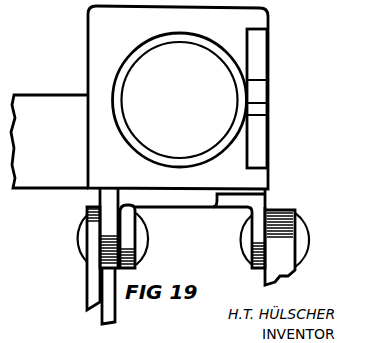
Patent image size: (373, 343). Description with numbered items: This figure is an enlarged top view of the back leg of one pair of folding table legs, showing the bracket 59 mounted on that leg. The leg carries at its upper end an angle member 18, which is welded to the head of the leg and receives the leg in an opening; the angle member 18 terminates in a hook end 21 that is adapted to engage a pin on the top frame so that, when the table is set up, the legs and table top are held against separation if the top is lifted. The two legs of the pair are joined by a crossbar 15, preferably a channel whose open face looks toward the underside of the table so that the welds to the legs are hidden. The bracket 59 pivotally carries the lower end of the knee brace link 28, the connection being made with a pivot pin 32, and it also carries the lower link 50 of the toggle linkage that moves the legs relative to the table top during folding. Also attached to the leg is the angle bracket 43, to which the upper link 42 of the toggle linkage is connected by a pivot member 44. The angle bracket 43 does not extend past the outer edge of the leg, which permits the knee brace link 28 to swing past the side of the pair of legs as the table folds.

The angle member 18 is at (107, 40).
The crossbar 15 is at (77, 104).
The hook end 21 is at (258, 130).
The bracket 43 is at (108, 193).
The upper link 42 is at (95, 272).
The pivot member 44 is at (82, 237).
The lower link 50 is at (108, 310).
The bracket 59 is at (248, 207).
The knee brace link 28 is at (281, 257).
The pivot pin 32 is at (308, 236).